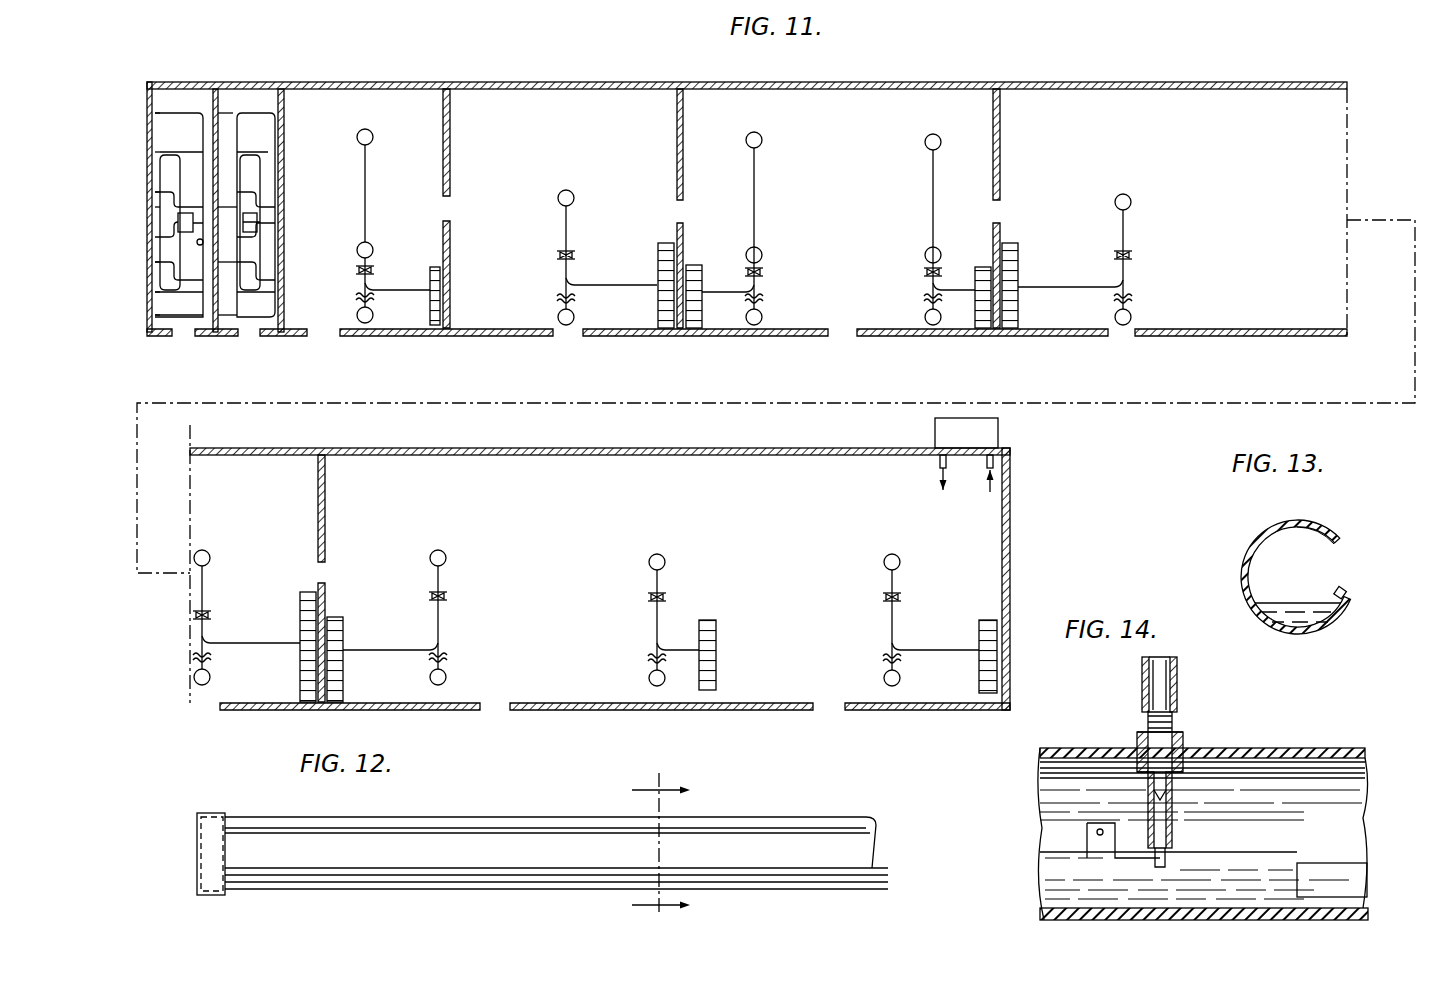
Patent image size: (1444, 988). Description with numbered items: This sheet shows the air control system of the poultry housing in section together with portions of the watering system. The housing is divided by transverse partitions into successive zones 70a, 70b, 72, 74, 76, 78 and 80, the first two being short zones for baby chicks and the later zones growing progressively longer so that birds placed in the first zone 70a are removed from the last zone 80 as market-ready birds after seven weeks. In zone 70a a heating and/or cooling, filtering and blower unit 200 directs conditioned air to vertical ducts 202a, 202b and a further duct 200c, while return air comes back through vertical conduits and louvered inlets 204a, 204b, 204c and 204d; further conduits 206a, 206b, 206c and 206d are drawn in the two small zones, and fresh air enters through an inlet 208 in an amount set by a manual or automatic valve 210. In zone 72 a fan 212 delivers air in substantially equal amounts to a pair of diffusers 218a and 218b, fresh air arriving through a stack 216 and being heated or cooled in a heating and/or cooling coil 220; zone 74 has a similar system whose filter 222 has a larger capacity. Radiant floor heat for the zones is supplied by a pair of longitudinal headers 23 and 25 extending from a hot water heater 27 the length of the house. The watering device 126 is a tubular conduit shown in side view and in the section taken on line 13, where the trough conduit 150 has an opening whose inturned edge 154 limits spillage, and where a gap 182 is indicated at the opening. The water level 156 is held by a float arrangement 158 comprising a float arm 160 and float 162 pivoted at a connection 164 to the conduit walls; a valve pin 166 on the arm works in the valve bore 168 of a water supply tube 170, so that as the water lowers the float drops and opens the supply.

In FIG. 11, the zone 70a is at (172, 103).
In FIG. 11, the zone 70b is at (248, 103).
In FIG. 11, the zone 72 is at (368, 110).
In FIG. 11, the zone 74 is at (553, 112).
In FIG. 11, the zone 76 is at (800, 115).
In FIG. 11, the zone 78 is at (1108, 112).
In FIG. 11, the zone 80 is at (628, 478).
In FIG. 11, the heating and/or cooling, filtering and blower unit 200 is at (186, 212).
In FIG. 11, the conduit 200c is at (155, 305).
In FIG. 11, the vertical duct 202a is at (155, 152).
In FIG. 11, the vertical duct 202b is at (155, 220).
In FIG. 11, the vertical conduit and louvered inlet 204a is at (152, 113).
In FIG. 11, the vertical conduit and louvered inlet 204b is at (155, 192).
In FIG. 11, the vertical conduit and louvered inlet 204c is at (155, 275).
In FIG. 11, the vertical conduit and louvered inlet 204d is at (155, 316).
In FIG. 11, the conduit 206a is at (237, 113).
In FIG. 11, the conduit 206b is at (240, 200).
In FIG. 11, the conduit 206c is at (218, 270).
In FIG. 11, the conduit 206d is at (218, 320).
In FIG. 11, the inlet 208 is at (197, 242).
In FIG. 11, the valve 210 is at (203, 243).
In FIG. 11, the fan 212 is at (356, 270).
In FIG. 11, the stack 216 is at (373, 315).
In FIG. 11, the diffuser 218a is at (373, 250).
In FIG. 11, the diffuser 218b is at (373, 137).
In FIG. 11, the heating and/or cooling coil 220 is at (356, 292).
In FIG. 11, the filter 222 is at (654, 284).
In FIG. 11, the longitudinal header 23 is at (985, 465).
In FIG. 11, the longitudinal header 25 is at (938, 465).
In FIG. 11, the hot water heater 27 is at (935, 432).
In FIG. 12, the water supply means 126 is at (578, 812).
In FIG. 13, the water supply means 126 is at (1234, 554).
In FIG. 14, the water supply means 126 is at (1260, 732).
In FIG. 12, the section line 13 is at (671, 846).
In FIG. 13, the conduit 150 is at (1295, 522).
In FIG. 13, the edge 154 is at (1356, 597).
In FIG. 13, the water level 156 is at (1318, 605).
In FIG. 14, the water level 156 is at (1050, 882).
In FIG. 14, the float arrangement 158 is at (1252, 850).
In FIG. 14, the float arm 160 is at (1200, 862).
In FIG. 14, the float 162 is at (1340, 878).
In FIG. 14, the pivotal connection 164 is at (1092, 832).
In FIG. 14, the valve pin 166 is at (1162, 836).
In FIG. 14, the valve bore 168 is at (1183, 778).
In FIG. 14, the water supply tube 170 is at (1165, 683).
In FIG. 13, the gap 182 is at (1355, 554).